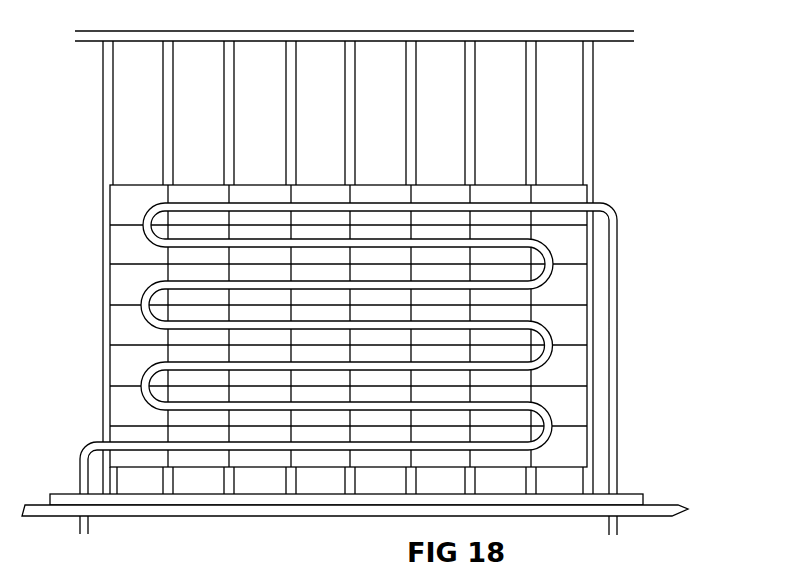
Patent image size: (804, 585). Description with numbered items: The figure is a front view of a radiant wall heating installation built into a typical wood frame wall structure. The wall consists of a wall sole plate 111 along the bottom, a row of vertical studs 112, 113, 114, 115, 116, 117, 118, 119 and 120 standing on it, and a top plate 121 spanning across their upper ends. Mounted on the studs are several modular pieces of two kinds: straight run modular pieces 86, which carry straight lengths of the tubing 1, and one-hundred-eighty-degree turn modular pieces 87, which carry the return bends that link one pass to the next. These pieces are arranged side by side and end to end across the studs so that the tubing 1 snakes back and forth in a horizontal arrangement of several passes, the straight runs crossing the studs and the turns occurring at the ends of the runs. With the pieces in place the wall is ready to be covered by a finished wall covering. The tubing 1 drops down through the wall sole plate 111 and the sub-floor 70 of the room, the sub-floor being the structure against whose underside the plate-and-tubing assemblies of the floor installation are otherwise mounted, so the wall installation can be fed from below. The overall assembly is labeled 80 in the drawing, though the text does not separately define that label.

The tubing 1 is at (384, 203).
The sub-floor 70 is at (675, 507).
The heat exchanger assembly 80 is at (396, 4).
The straight run modular piece 86 is at (563, 183).
The 180 degree turn modular piece 87 is at (118, 235).
The wall sole plate 111 is at (635, 494).
The stud 112 is at (115, 80).
The stud 113 is at (173, 80).
The stud 114 is at (235, 85).
The stud 115 is at (294, 95).
The stud 116 is at (355, 95).
The stud 117 is at (417, 90).
The stud 118 is at (477, 88).
The stud 119 is at (537, 93).
The stud 120 is at (593, 70).
The top plate 121 is at (364, 21).